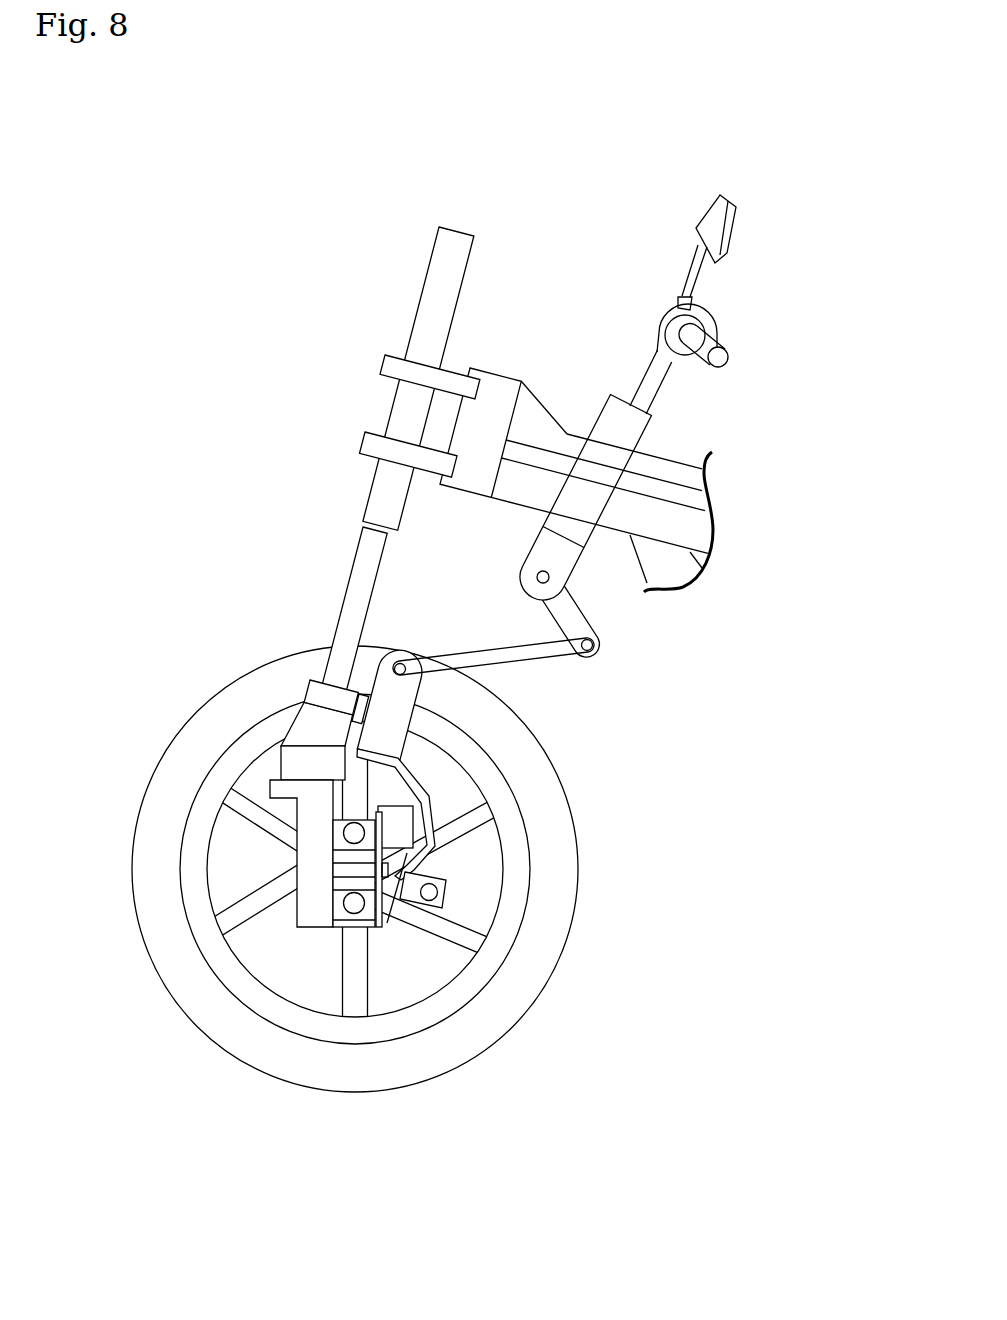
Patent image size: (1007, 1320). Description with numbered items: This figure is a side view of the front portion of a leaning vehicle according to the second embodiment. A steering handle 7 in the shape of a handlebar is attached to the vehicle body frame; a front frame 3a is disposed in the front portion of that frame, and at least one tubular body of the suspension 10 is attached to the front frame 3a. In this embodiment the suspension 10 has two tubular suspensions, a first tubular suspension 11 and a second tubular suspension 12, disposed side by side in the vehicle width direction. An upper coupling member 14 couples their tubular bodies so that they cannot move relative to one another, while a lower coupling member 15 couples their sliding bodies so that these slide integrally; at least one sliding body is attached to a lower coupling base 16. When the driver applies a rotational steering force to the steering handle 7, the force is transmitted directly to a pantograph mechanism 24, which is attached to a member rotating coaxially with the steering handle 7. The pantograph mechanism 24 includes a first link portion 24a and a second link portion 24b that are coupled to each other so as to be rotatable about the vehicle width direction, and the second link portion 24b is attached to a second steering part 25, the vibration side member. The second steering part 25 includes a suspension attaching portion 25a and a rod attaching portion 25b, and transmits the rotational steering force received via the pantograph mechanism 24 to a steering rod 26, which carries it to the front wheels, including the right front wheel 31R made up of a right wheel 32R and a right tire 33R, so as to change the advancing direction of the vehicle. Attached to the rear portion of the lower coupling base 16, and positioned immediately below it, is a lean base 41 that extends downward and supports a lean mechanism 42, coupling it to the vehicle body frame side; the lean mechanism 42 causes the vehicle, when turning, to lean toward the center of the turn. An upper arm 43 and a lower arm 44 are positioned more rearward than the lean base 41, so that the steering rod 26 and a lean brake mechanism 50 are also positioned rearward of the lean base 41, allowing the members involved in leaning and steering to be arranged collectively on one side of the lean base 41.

The suspension 10 is at (368, 182).
The steering handle 7 is at (782, 227).
The first tubular suspension 11 is at (437, 252).
The second tubular suspension 12 is at (410, 307).
The upper coupling member 14 is at (370, 443).
The lower coupling member 15 is at (312, 690).
The lower coupling base 16 is at (295, 728).
The front frame 3a is at (541, 421).
The pantograph mechanism 24 is at (615, 559).
The first link portion 24a is at (577, 617).
The second link portion 24b is at (553, 650).
The second steering part 25 is at (564, 765).
The suspension attaching portion 25a is at (414, 693).
The rod attaching portion 25b is at (425, 782).
The steering rod 26 is at (440, 892).
The lean brake mechanism 50 is at (406, 830).
The upper arm 43 is at (344, 833).
The lean base 41 is at (297, 867).
The lower arm 44 is at (354, 906).
The lean mechanism 42 is at (396, 935).
The right front wheel 31R is at (355, 941).
The right wheel 32R is at (306, 1043).
The right tire 33R is at (400, 1078).